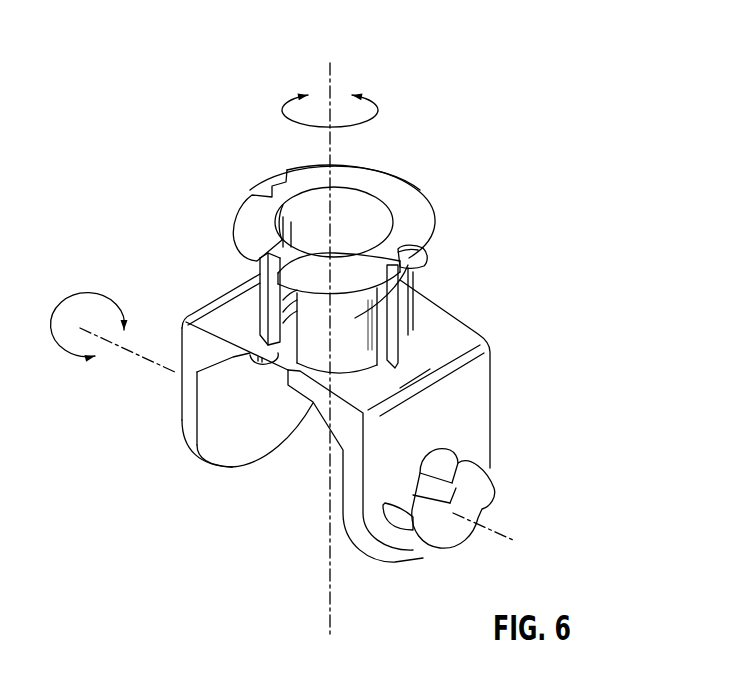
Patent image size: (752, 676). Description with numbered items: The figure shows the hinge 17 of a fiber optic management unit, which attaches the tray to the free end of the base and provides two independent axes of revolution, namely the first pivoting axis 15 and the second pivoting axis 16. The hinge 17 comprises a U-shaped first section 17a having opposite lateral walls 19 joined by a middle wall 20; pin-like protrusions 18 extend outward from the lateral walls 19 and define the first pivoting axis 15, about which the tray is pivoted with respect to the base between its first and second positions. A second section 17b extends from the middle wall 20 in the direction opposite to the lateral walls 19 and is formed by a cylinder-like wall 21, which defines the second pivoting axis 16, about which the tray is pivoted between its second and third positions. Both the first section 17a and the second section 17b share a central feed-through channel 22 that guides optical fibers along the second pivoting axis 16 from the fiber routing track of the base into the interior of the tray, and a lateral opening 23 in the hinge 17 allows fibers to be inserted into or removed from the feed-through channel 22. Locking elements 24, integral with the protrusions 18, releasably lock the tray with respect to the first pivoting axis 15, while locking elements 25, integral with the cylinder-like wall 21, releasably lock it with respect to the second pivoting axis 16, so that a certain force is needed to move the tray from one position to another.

The first pivoting axis 15 is at (160, 370).
The second pivoting axis 16 is at (330, 590).
The hinge 17 is at (567, 190).
The U-shaped first section 17a is at (510, 333).
The second section 17b is at (510, 182).
The protrusions 18 is at (182, 398).
The lateral walls 19 is at (393, 453).
The middle wall 20 is at (230, 315).
The cylinder-like wall 21 is at (428, 253).
The feed-through channel 22 is at (364, 213).
The lateral opening 23 is at (290, 315).
The locking elements 24 is at (402, 527).
The locking elements 25 is at (377, 257).